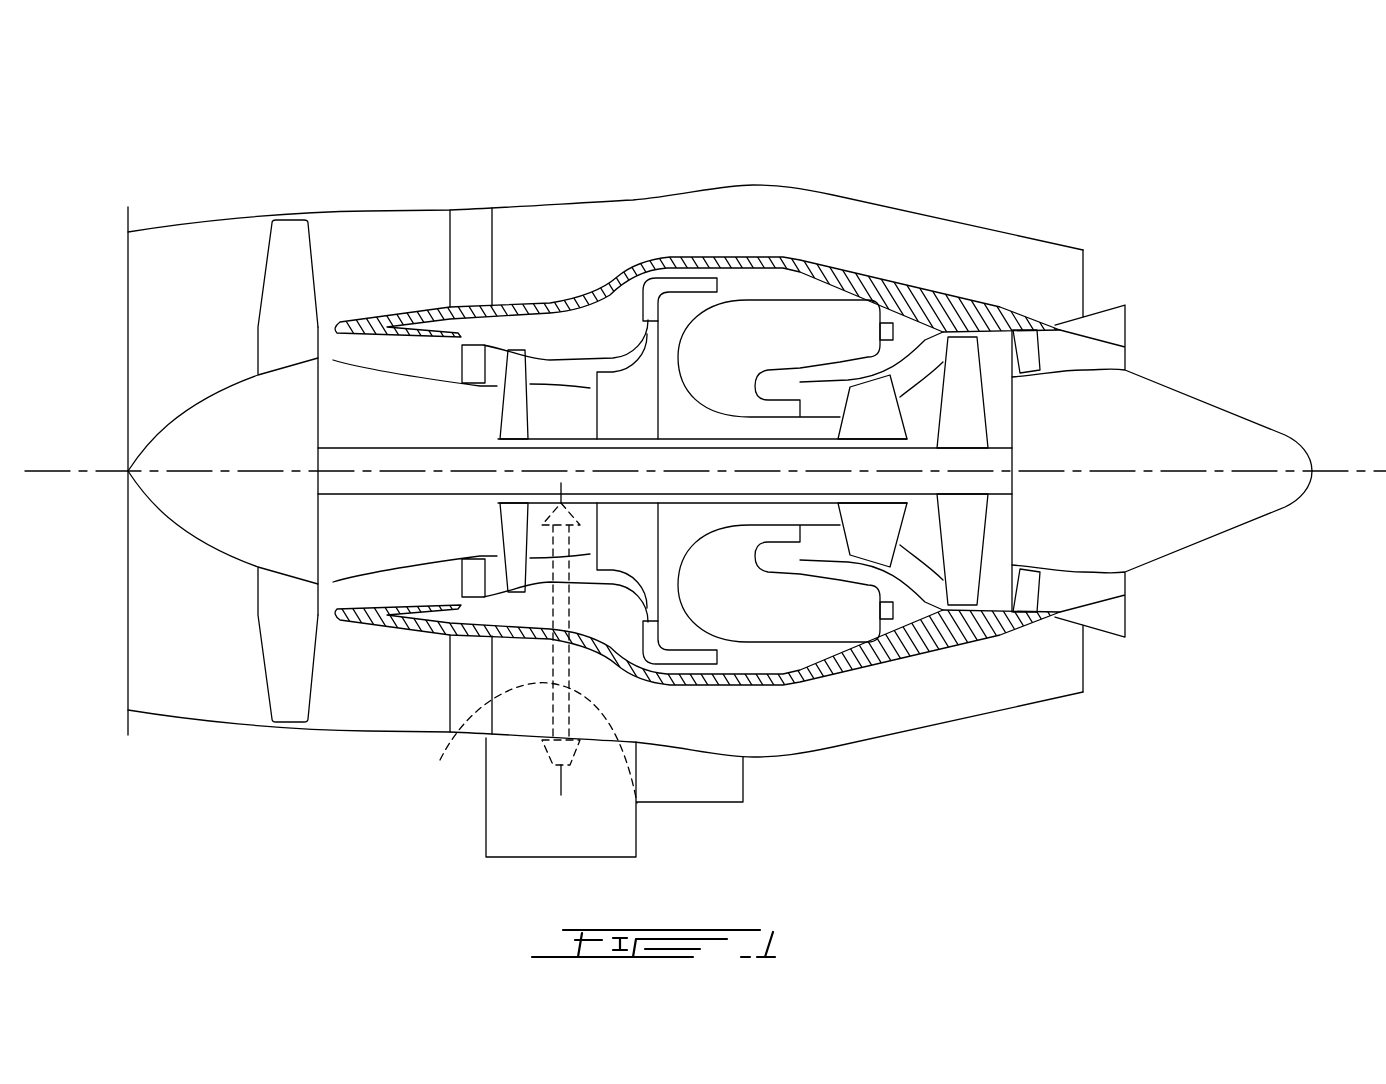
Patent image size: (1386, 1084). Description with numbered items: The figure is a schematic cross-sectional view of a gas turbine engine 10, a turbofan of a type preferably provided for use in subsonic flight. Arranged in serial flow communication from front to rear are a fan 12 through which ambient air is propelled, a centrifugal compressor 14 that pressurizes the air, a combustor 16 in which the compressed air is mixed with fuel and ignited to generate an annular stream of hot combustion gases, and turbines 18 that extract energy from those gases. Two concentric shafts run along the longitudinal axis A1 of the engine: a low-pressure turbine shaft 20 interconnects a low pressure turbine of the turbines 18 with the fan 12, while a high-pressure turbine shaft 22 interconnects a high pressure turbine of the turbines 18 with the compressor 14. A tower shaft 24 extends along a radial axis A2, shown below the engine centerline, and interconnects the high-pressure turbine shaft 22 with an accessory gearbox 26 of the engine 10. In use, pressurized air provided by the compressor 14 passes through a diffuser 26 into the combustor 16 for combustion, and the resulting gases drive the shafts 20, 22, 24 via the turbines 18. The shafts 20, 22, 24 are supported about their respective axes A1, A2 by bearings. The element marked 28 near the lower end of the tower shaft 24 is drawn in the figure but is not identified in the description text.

The gas turbine engine 10 is at (956, 159).
The fan 12 is at (283, 633).
The centrifugal compressor 14 is at (550, 365).
The combustor 16 is at (779, 322).
The turbines 18 is at (917, 543).
The low-pressure turbine shaft 20 is at (393, 482).
The high-pressure turbine shaft 22 is at (703, 503).
The tower shaft 24 is at (450, 752).
The accessory gearbox 26 is at (677, 287).
The gear coupling 28 is at (548, 753).
The longitudinal axis A1 is at (1350, 471).
The radial axis A2 is at (637, 803).